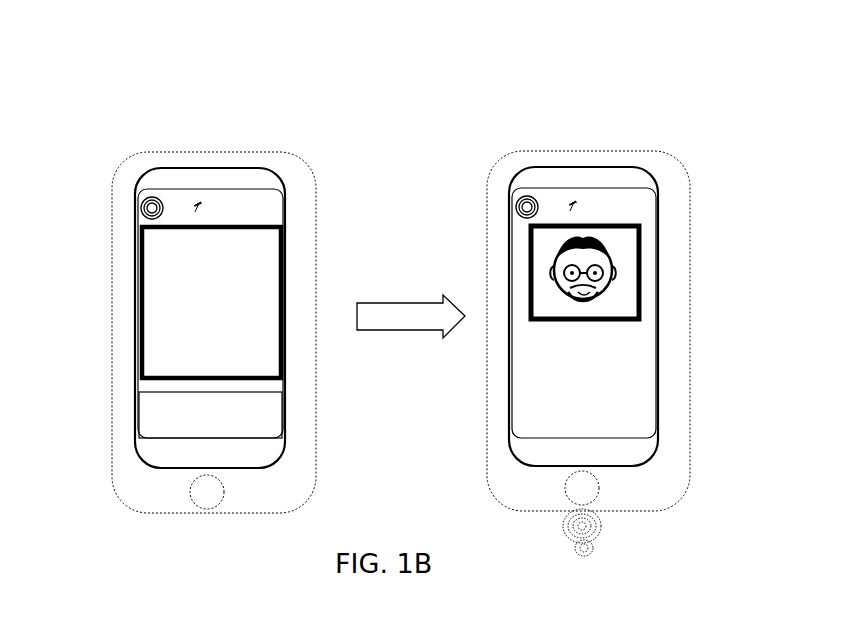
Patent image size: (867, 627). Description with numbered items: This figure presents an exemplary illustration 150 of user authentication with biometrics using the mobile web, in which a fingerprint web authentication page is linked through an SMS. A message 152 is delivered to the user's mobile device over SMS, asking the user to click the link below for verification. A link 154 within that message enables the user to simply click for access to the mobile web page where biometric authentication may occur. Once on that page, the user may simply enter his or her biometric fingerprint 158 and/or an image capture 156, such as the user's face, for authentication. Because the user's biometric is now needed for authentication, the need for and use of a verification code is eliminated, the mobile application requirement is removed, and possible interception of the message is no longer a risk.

The verification process example 150 is at (686, 55).
The verification message 152 is at (158, 255).
The link 154 is at (137, 427).
The image capture 156 is at (530, 275).
The biometric fingerprint 158 is at (524, 527).